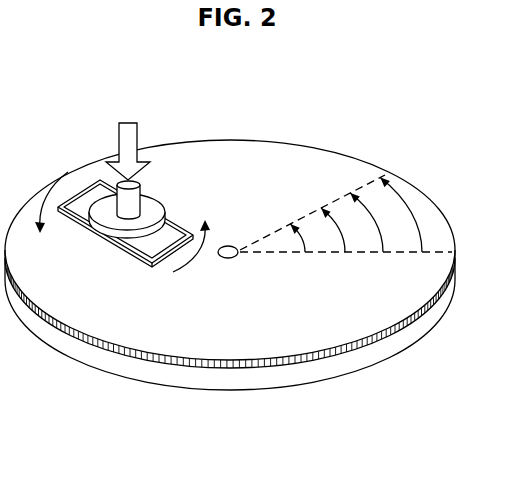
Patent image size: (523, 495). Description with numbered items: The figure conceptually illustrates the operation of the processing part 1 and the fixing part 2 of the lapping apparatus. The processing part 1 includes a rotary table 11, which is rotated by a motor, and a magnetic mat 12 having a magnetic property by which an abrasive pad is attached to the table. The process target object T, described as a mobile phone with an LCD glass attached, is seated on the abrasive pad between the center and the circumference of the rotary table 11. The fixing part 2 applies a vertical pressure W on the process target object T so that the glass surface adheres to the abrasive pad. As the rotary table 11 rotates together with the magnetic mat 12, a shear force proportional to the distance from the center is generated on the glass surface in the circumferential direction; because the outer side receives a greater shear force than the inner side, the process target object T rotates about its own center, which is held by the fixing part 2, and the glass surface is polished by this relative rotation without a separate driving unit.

The processing part 1 is at (234, 299).
The rotary table 11 is at (183, 378).
The magnetic mat 12 is at (140, 358).
The fixing part 2 is at (156, 201).
The process target object T is at (87, 190).
The vertical pressure W is at (128, 137).